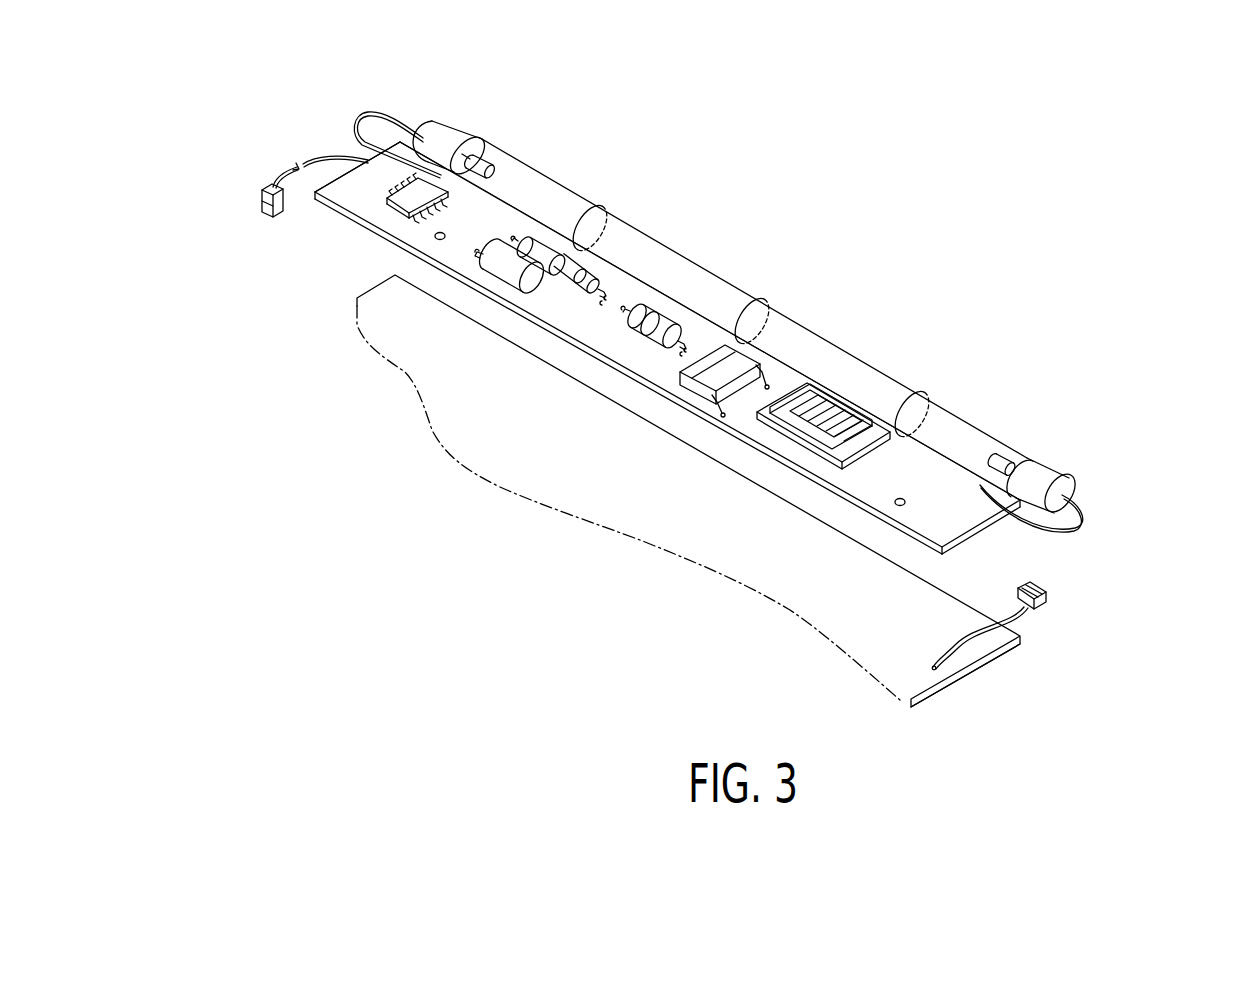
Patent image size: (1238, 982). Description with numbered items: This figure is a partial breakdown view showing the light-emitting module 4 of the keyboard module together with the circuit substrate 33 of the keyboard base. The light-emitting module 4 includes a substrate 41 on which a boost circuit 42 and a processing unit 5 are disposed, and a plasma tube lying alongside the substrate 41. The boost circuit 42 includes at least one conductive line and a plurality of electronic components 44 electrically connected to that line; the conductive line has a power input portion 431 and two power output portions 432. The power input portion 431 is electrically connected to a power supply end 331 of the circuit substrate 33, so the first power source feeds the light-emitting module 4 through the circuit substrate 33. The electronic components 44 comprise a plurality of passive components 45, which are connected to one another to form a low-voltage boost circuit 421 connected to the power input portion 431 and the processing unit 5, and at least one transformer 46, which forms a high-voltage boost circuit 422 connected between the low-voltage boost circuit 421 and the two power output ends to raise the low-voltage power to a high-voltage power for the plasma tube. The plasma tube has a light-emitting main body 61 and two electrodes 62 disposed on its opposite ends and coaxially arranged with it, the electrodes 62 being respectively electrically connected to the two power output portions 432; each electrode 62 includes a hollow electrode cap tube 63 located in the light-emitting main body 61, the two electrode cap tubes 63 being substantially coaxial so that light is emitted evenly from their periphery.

The light-emitting module 4 is at (330, 135).
The processing unit 5 is at (407, 200).
The circuit substrate 33 is at (810, 600).
The power supply end 331 is at (1048, 602).
The substrate 41 is at (347, 198).
The boost circuit 42 is at (693, 433).
The low-voltage boost circuit 421 is at (610, 327).
The high-voltage boost circuit 422 is at (789, 368).
The power input portion 431 is at (260, 196).
The power output portion 432 is at (1082, 526).
The electronic components 44 is at (893, 253).
The passive components 45 is at (583, 291).
The transformer 46 is at (845, 415).
The light-emitting main body 61 is at (515, 170).
The electrode 62 is at (449, 133).
The electrode cap tube 63 is at (1000, 455).